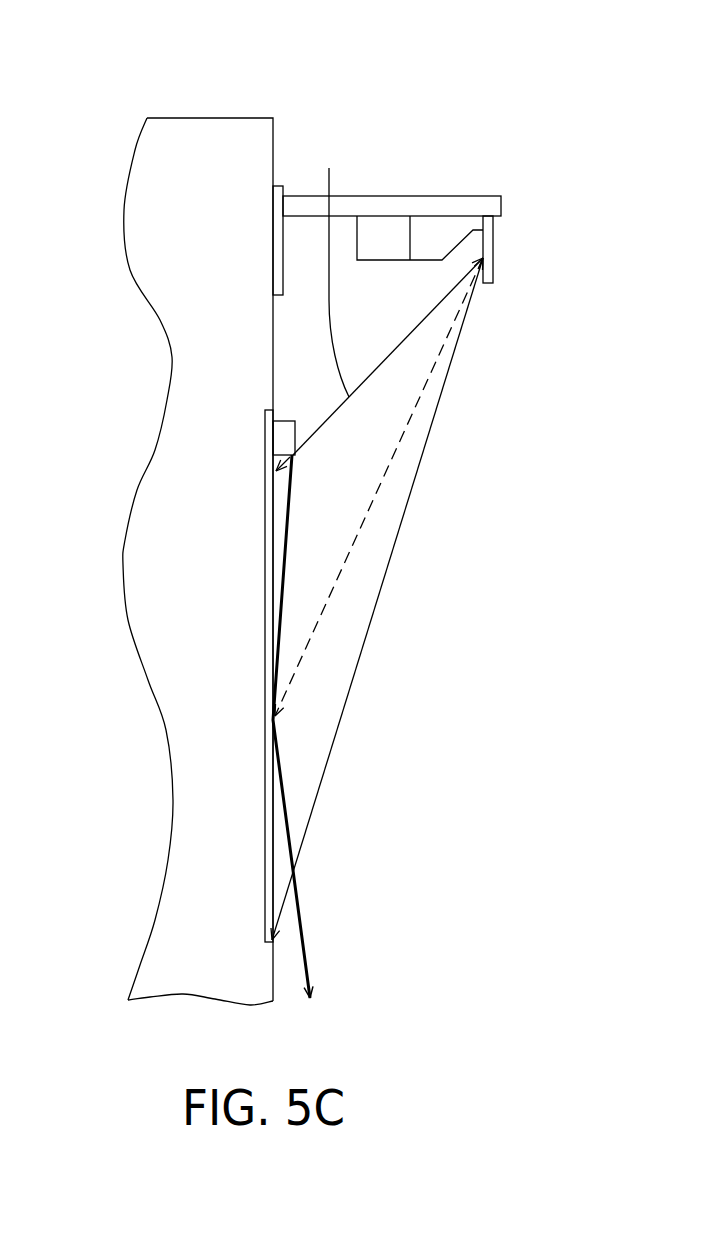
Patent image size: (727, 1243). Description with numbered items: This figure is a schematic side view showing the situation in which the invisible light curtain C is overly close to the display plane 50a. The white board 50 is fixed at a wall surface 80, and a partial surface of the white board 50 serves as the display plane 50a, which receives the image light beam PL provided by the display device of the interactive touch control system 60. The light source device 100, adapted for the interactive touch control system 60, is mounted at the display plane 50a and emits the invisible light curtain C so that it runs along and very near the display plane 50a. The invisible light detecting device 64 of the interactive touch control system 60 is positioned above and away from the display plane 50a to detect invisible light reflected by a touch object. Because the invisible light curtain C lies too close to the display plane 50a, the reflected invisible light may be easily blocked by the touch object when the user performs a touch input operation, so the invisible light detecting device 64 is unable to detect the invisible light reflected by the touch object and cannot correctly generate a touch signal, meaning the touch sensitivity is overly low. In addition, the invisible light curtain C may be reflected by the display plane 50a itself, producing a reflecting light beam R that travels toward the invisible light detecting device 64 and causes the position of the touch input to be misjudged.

The white board 50 is at (268, 768).
The display plane 50a is at (284, 564).
The interactive touch control system 60 is at (293, 123).
The invisible light detecting device 64 is at (493, 272).
The wall surface 80 is at (170, 608).
The light source device 100 is at (280, 438).
The invisible light curtain C is at (290, 500).
The reflecting light beam R is at (363, 527).
The image light beam PL is at (333, 265).